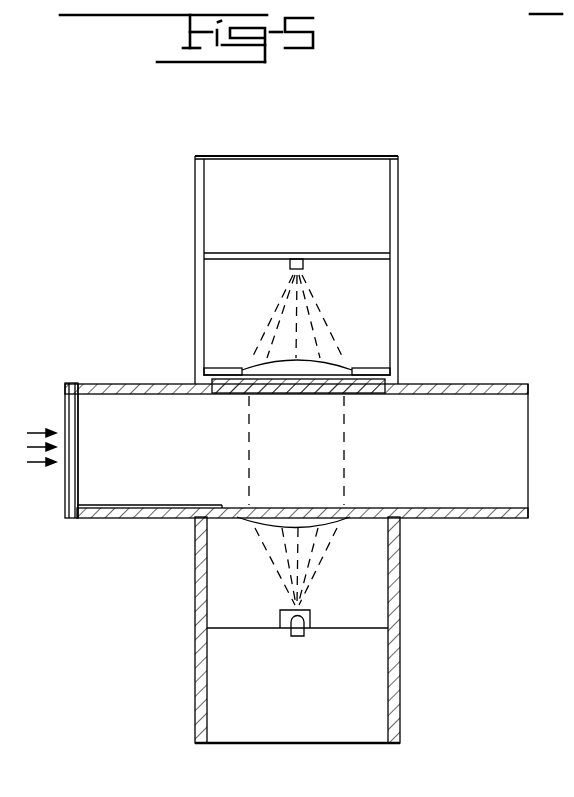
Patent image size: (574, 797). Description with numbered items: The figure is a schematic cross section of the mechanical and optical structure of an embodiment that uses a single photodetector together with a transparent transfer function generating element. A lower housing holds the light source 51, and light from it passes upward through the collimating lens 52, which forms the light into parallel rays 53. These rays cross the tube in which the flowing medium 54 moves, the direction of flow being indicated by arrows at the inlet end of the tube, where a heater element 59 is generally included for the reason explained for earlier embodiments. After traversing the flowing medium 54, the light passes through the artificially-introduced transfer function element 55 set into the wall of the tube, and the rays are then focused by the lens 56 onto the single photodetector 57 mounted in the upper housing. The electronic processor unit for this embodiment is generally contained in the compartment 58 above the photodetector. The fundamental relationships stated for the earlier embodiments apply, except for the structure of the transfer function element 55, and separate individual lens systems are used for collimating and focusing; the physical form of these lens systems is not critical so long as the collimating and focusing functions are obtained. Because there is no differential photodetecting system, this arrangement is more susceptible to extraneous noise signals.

The light source 51 is at (300, 636).
The collimating lens 52 is at (343, 522).
The parallel rays 53 is at (345, 490).
The flowing medium 54 is at (48, 506).
The transfer function element 55 is at (347, 395).
The lens 56 is at (342, 364).
The photodetector 57 is at (303, 263).
The compartment 58 is at (306, 212).
The heater element 59 is at (80, 487).